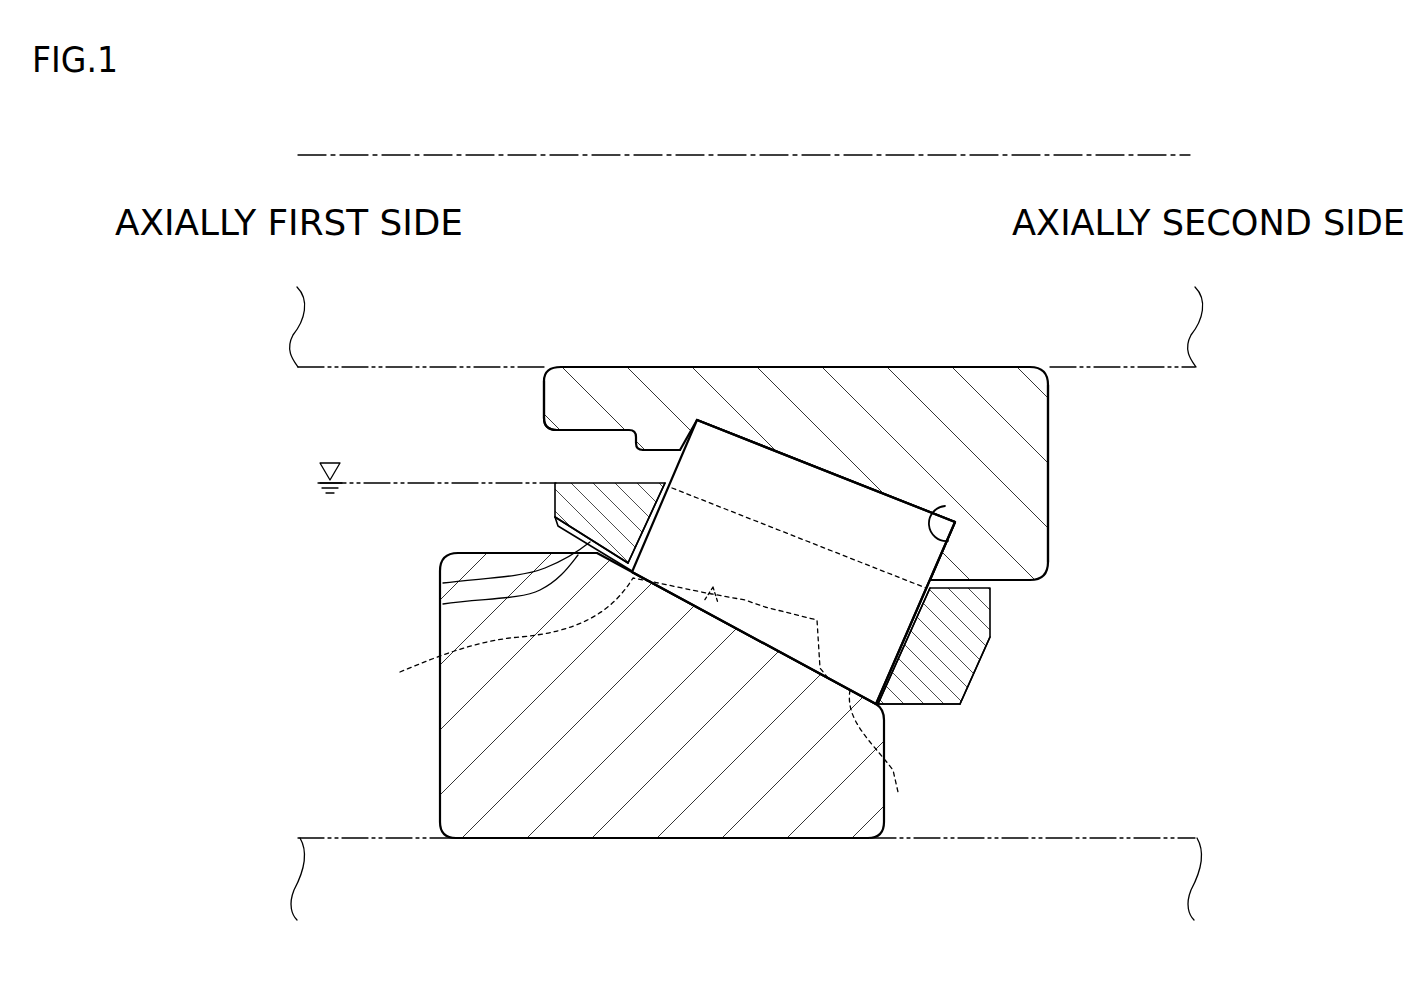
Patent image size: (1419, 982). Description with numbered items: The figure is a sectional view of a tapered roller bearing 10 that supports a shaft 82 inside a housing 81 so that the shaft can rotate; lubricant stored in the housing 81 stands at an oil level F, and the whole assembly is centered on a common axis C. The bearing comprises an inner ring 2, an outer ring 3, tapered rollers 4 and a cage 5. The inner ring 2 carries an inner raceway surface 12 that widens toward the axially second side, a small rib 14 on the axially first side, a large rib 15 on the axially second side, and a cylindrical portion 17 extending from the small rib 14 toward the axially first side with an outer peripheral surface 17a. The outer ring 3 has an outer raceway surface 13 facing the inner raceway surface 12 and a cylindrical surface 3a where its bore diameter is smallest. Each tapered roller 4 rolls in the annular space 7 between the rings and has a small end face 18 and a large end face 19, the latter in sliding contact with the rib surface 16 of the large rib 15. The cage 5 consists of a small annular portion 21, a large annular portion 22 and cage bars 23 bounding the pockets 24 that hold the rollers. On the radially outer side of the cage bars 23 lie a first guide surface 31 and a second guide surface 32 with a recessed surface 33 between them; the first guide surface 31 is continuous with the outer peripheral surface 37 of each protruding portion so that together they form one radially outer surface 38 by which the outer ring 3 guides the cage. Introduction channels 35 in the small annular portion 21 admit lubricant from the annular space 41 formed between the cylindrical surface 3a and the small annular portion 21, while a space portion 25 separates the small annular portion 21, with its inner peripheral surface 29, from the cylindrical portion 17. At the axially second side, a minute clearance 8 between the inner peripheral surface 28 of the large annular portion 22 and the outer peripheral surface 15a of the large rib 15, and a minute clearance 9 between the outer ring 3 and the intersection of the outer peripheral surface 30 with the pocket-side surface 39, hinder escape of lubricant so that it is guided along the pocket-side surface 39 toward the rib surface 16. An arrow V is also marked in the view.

The inner ring 2 is at (848, 367).
The outer ring 3 is at (683, 840).
The cylindrical surface 3a is at (495, 553).
The tapered roller 4 is at (886, 492).
The cage 5 is at (984, 660).
The annular space 7 is at (758, 447).
The minute clearance 8 is at (1014, 592).
The minute clearance 9 is at (888, 717).
The tapered roller bearing 10 is at (813, 856).
The inner raceway surface 12 is at (800, 462).
The outer raceway surface 13 is at (793, 658).
The small rib 14 is at (663, 437).
The large rib 15 is at (1013, 530).
The outer peripheral surface 15a is at (978, 592).
The rib surface 16 is at (962, 510).
The cylindrical portion 17 is at (568, 390).
The outer peripheral surface 17a is at (552, 438).
The small end face 18 is at (647, 517).
The large end face 19 is at (922, 610).
The small annular portion 21 is at (595, 493).
The large annular portion 22 is at (958, 704).
The cage bar 23 is at (752, 592).
The pocket 24 is at (705, 600).
The space portion 25 is at (560, 464).
The inner peripheral surface 28 is at (952, 578).
The inner peripheral surface 29 is at (629, 479).
The outer peripheral surface 30 is at (928, 706).
The first guide surface 31 is at (607, 634).
The second guide surface 32 is at (887, 759).
The recessed surface 33 is at (763, 615).
The introduction channel 35 is at (443, 583).
The outer peripheral surface 37 is at (443, 604).
The radially outer surface 38 is at (357, 608).
The pocket-side surface 39 is at (896, 660).
The annular space 41 is at (515, 544).
The housing 81 is at (1143, 836).
The shaft 82 is at (1143, 372).
The axis C is at (1043, 155).
The oil level F is at (336, 462).
The view direction V is at (506, 436).